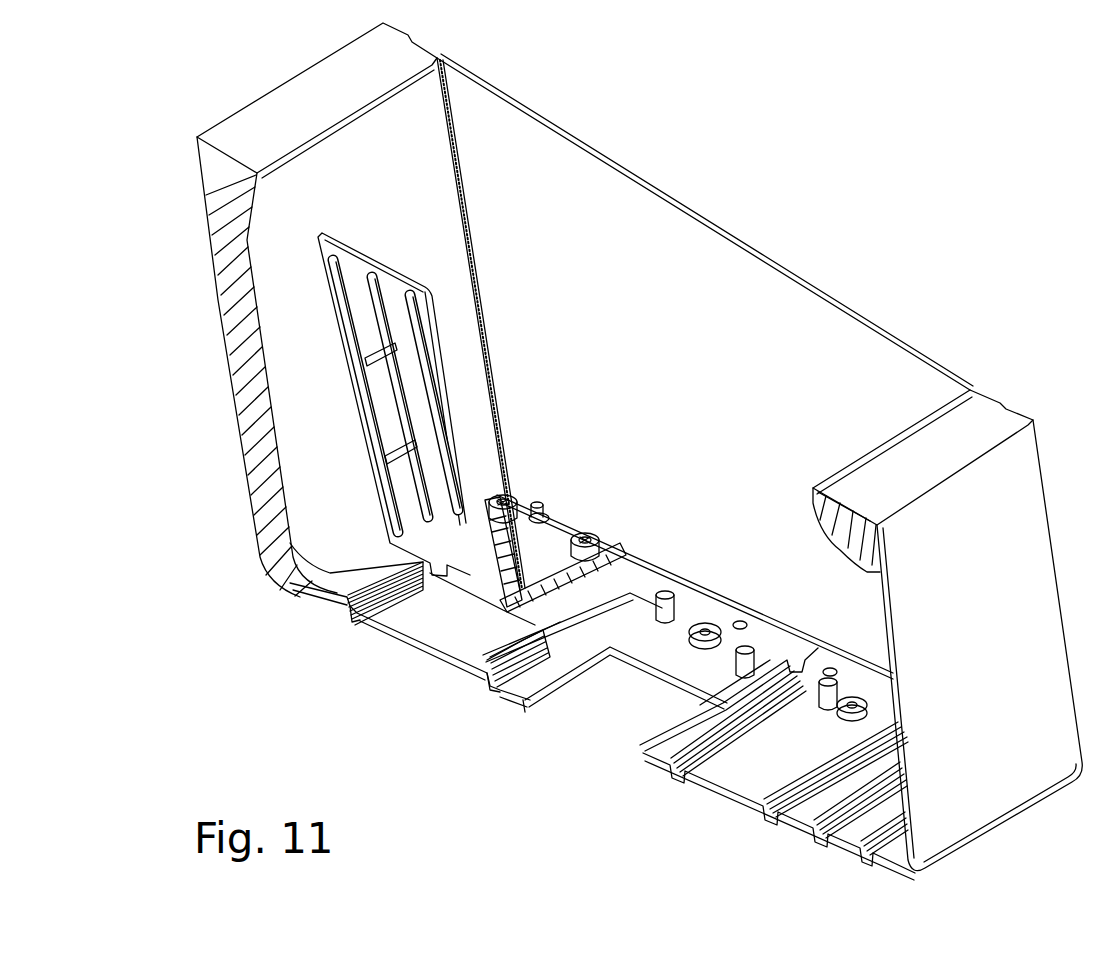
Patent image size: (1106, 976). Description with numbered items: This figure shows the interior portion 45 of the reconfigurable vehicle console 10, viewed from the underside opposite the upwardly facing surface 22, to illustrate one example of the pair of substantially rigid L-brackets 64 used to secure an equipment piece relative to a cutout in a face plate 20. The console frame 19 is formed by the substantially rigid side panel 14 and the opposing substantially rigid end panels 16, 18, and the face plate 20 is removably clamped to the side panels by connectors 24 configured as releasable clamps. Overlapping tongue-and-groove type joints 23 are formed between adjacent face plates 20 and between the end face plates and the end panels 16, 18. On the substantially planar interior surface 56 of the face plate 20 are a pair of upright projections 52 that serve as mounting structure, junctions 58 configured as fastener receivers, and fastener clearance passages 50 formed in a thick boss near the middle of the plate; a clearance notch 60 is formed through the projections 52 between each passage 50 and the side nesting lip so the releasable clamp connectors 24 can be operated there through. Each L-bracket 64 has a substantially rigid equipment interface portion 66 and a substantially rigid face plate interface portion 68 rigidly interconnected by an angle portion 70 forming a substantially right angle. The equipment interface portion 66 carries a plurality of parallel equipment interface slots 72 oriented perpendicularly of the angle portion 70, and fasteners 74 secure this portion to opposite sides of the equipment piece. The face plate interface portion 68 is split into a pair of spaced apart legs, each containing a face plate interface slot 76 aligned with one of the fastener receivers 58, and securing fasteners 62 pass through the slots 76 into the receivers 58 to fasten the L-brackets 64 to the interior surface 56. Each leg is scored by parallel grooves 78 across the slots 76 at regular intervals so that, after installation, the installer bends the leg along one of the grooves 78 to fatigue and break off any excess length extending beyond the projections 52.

The reconfigurable vehicle console 10 is at (872, 206).
The second side panel 14 is at (712, 223).
The first end panel 16 is at (1018, 800).
The second end panel 18 is at (330, 48).
The console frame 19 is at (265, 92).
The face plate 20 is at (417, 652).
The upwardly facing surface 22 is at (558, 780).
The overlapping joint 23 is at (352, 613).
The connector 24 is at (613, 598).
The interior portion 45 is at (657, 307).
The fastener clearance passage 50 is at (720, 650).
The upright projection 52 is at (405, 622).
The interior surface 56 is at (591, 630).
The junction 58 is at (668, 593).
The clearance notch 60 is at (705, 625).
The fastener 62 is at (508, 492).
The L-bracket 64 is at (320, 598).
The equipment interface portion 66 is at (388, 423).
The face plate interface portion 68 is at (512, 492).
The angle portion 70 is at (452, 660).
The equipment interface slot 72 is at (330, 288).
The fastener 74 is at (365, 363).
The face plate interface slot 76 is at (540, 603).
The scoring groove 78 is at (513, 693).